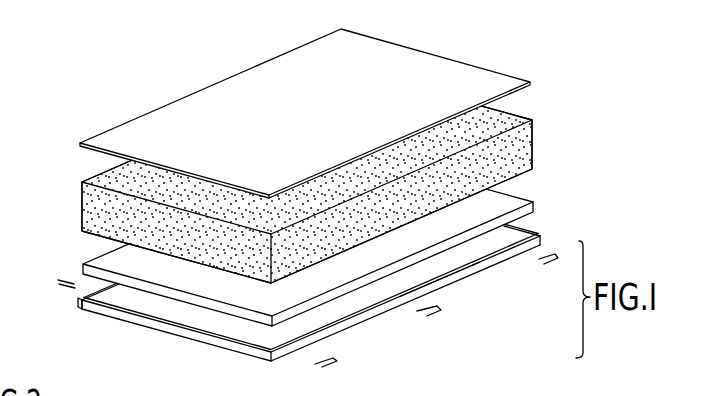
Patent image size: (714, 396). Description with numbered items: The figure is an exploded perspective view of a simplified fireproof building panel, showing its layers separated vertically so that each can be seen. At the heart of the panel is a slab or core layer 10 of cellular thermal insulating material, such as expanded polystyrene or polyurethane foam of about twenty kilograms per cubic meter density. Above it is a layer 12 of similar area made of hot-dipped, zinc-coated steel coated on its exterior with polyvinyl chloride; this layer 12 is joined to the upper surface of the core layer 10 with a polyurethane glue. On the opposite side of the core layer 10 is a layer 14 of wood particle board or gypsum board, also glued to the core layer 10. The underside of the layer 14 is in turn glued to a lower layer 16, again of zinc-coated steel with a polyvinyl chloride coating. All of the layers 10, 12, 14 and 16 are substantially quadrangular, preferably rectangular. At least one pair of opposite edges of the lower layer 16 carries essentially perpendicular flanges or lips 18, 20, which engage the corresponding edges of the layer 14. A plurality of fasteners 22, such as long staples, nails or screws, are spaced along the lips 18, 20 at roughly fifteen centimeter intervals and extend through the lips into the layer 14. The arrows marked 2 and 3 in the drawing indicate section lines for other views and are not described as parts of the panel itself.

The core layer 10 is at (530, 153).
The upper steel layer 12 is at (499, 80).
The particle board layer 14 is at (517, 203).
The lower steel layer 16 is at (505, 244).
The flange 18 is at (76, 300).
The flange 20 is at (492, 266).
The fasteners 22 is at (62, 281).
The section line 2- 2 is at (78, 335).
The section line 3- 3 is at (475, 387).